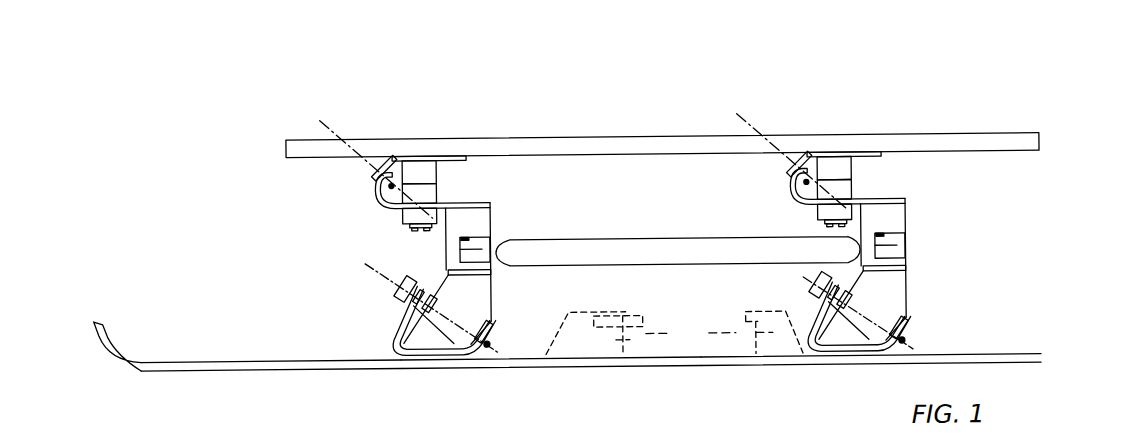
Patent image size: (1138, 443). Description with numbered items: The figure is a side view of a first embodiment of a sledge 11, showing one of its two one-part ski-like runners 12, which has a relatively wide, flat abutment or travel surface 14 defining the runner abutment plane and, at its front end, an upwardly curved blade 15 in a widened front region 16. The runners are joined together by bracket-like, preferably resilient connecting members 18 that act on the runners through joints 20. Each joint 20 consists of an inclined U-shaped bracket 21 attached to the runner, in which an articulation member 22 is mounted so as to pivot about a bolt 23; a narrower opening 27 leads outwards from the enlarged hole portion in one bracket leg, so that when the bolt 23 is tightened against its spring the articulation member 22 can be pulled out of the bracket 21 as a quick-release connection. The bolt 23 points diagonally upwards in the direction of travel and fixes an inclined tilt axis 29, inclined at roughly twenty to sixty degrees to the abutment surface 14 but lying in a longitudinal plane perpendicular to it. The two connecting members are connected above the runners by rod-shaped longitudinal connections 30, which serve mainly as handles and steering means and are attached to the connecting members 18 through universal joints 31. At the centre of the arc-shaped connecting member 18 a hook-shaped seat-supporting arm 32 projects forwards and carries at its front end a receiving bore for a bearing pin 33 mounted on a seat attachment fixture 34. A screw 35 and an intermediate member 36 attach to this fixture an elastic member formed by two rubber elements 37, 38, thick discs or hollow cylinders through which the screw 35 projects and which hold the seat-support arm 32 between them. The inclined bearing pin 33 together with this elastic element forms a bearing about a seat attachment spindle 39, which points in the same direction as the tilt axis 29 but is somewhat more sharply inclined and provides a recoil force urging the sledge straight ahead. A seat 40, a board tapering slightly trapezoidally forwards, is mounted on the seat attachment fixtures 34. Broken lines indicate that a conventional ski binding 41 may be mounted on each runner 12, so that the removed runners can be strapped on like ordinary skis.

The sledge 11 is at (986, 116).
The runner 12 is at (727, 361).
The abutment surface 14 is at (601, 366).
The upwardly curved blade 15 is at (105, 332).
The front region 16 is at (187, 366).
The connecting member 18 is at (478, 222).
The joint 20 is at (510, 297).
The U-shaped bracket 21 is at (402, 348).
The articulation member 22 is at (476, 308).
The bolt 23 is at (414, 307).
The narrower opening 27 is at (408, 308).
The inclined tilt axis 29 is at (360, 270).
The longitudinal connection 30 is at (692, 222).
The universal joint 31 is at (465, 242).
The seat-supporting arm 32 is at (480, 204).
The bearing pin 33 is at (372, 172).
The seat attachment fixture 34 is at (394, 158).
The screw 35 is at (420, 230).
The intermediate member 36 is at (423, 170).
The rubber element 37 is at (430, 194).
The rubber element 38 is at (410, 214).
The seat attachment spindle 39 is at (330, 122).
The seat 40 is at (596, 135).
The ski binding 41 is at (674, 333).